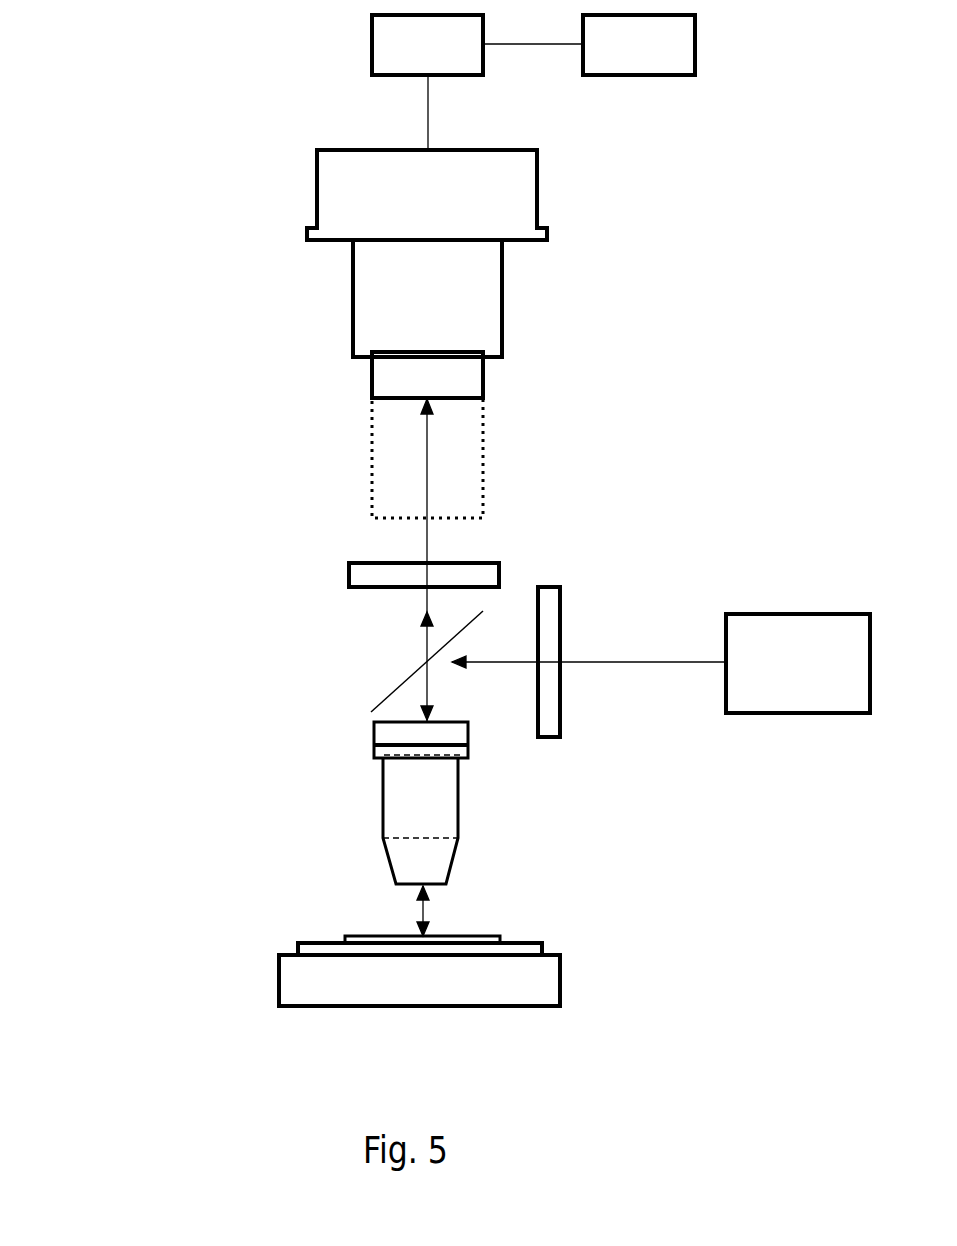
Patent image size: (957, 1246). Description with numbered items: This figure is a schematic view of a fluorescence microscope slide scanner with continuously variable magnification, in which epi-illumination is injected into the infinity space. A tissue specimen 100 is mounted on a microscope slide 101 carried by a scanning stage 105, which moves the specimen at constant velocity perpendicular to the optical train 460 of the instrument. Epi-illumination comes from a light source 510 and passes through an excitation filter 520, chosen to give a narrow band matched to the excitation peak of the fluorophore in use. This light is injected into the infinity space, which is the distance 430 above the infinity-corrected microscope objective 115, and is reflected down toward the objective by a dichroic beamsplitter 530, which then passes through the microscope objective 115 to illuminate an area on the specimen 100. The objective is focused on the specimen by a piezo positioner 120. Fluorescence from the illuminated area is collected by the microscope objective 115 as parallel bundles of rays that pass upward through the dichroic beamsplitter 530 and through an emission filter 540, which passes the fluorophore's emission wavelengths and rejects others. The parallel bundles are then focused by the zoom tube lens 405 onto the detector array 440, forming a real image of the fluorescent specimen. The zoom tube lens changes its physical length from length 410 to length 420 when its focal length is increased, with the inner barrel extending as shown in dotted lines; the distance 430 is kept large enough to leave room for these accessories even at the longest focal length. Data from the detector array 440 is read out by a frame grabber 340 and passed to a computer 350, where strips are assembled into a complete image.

The frame grabber 340 is at (372, 47).
The computer 350 is at (695, 44).
The detector array 440 is at (537, 185).
The length 410 is at (503, 242).
The zoom tube lens 405 is at (483, 382).
The length 420 is at (340, 243).
The distance 430 is at (348, 520).
The optical train 460 is at (180, 152).
The emission filter 540 is at (499, 574).
The excitation filter 520 is at (560, 623).
The dichroic beamsplitter 530 is at (388, 697).
The light source 510 is at (760, 713).
The piezo positioner 120 is at (468, 732).
The infinity-corrected microscope objective 115 is at (458, 812).
The tissue specimen 100 is at (500, 938).
The microscope slide 101 is at (542, 950).
The scanning stage 105 is at (560, 980).